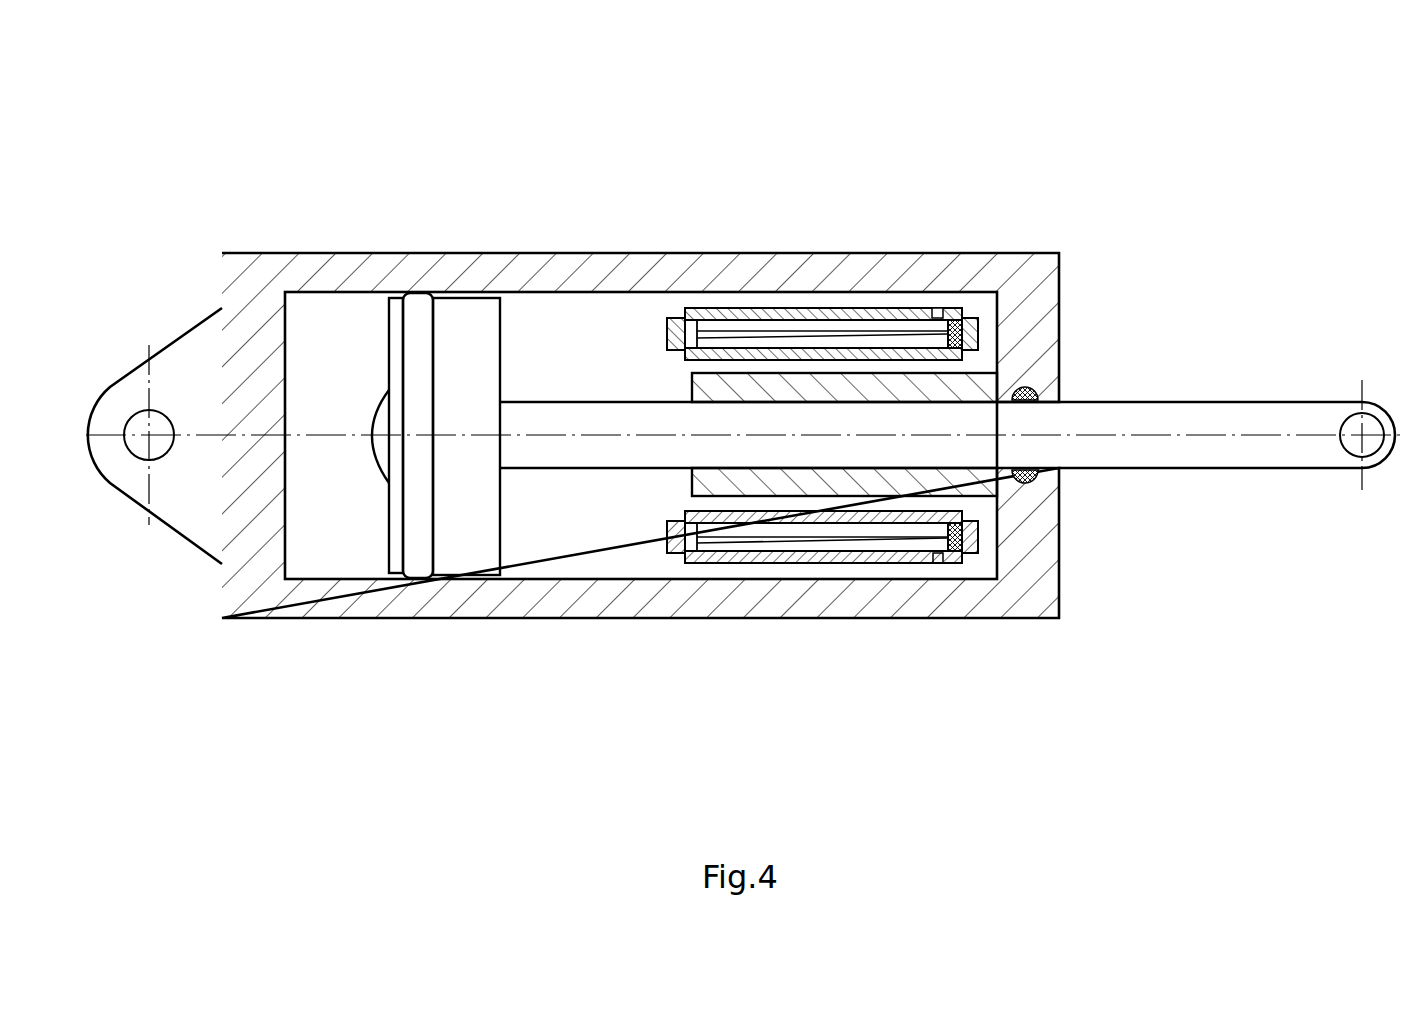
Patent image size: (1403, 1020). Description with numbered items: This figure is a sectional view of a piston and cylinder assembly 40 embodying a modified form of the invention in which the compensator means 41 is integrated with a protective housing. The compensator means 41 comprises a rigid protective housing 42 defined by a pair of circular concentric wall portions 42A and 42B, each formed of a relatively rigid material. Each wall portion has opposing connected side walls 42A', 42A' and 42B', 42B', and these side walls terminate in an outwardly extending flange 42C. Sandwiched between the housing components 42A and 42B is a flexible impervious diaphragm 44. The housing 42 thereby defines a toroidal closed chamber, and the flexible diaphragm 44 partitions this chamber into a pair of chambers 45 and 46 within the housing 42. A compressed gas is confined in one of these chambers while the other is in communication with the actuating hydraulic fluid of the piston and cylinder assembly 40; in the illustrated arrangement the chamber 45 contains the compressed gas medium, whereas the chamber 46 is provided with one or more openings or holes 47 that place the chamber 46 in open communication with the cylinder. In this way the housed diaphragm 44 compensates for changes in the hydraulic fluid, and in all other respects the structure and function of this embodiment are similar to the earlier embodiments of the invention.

The piston and cylinder assembly 40 is at (565, 221).
The compensator means 41 is at (681, 310).
The rigid protective housing 42 is at (696, 322).
The circular concentric wall portion 42A is at (823, 219).
The circular concentric wall portion 42B is at (823, 239).
The side wall 42A' is at (872, 648).
The side wall 42B' is at (738, 606).
The outwardly extending flange 42C is at (975, 537).
The flexible impervious diaphragm 44 is at (800, 543).
The chamber 45 is at (925, 338).
The chamber 46 is at (949, 323).
The opening 47 is at (940, 308).